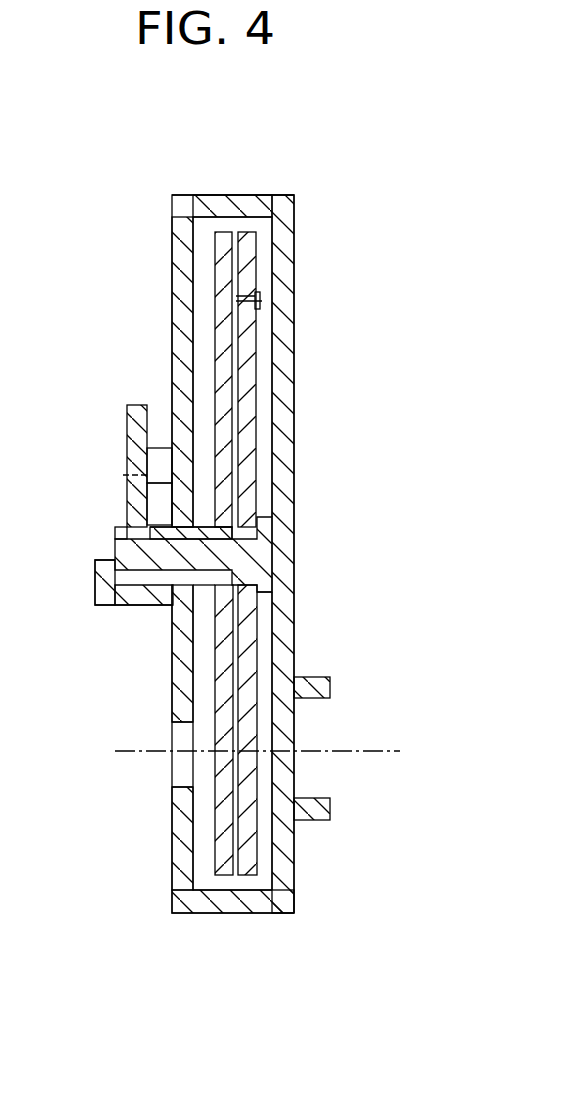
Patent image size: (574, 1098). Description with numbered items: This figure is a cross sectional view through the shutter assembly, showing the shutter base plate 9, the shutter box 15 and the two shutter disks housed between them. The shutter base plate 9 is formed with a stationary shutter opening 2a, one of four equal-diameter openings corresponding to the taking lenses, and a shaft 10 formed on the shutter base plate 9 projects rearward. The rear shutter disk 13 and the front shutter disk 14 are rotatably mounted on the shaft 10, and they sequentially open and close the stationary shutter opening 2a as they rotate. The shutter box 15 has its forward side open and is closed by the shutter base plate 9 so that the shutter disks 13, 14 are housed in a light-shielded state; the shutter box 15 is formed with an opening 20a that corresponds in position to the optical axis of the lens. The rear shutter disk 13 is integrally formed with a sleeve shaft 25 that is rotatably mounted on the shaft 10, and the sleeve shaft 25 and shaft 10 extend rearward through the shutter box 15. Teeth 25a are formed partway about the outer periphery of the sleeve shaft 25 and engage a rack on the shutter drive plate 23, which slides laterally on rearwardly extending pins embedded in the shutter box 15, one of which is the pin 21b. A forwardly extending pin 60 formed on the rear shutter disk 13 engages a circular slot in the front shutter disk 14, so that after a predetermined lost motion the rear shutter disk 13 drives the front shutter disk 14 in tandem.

The stationary shutter opening 2a is at (280, 763).
The shutter base plate 9 is at (288, 382).
The shaft 10 is at (120, 548).
The rear shutter disk 13 is at (215, 833).
The front shutter disk 14 is at (257, 642).
The shutter box 15 is at (195, 195).
The opening 20a is at (185, 781).
The pin 21b is at (162, 447).
The shutter drive plate 23 is at (125, 428).
The sleeve shaft 25 is at (132, 603).
The teeth 25a is at (118, 526).
The pin 60 is at (262, 301).